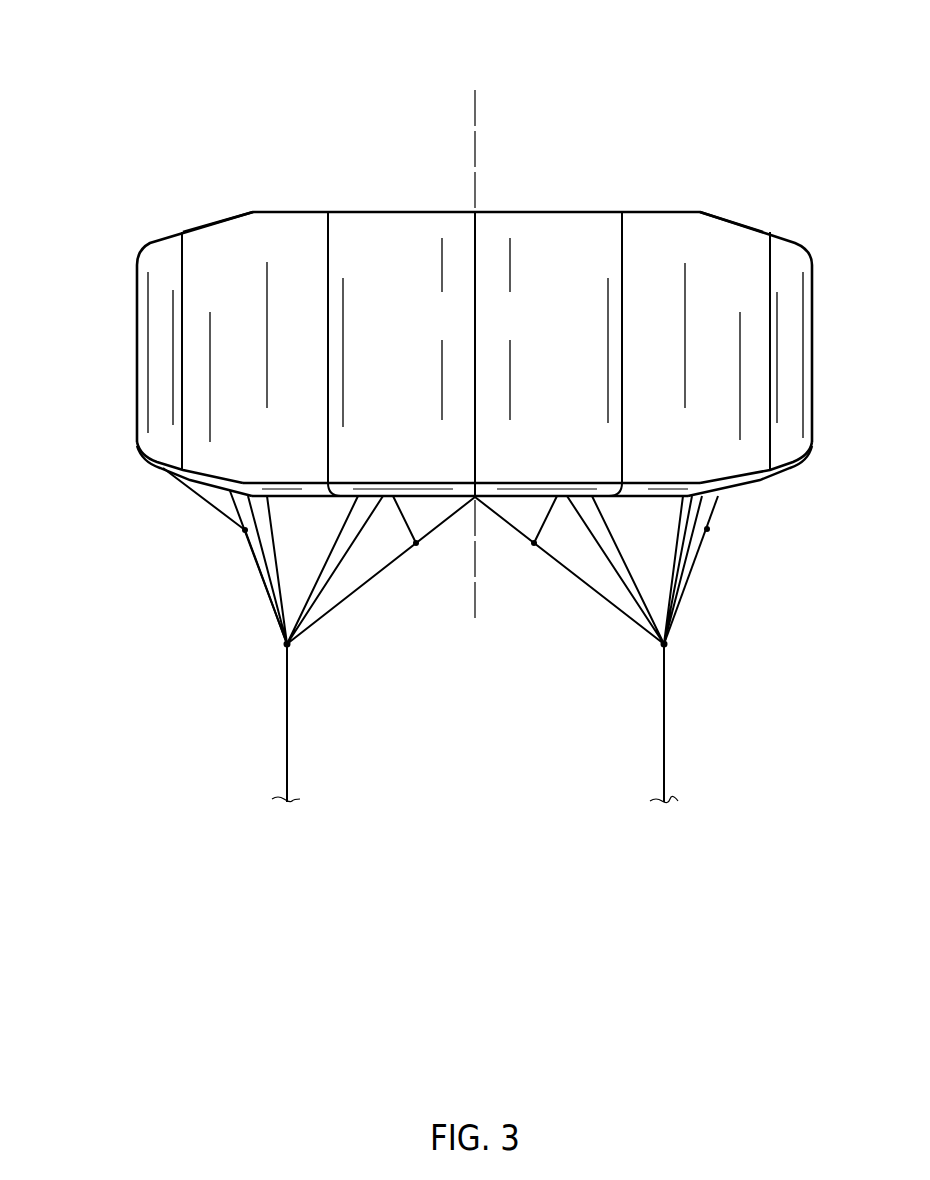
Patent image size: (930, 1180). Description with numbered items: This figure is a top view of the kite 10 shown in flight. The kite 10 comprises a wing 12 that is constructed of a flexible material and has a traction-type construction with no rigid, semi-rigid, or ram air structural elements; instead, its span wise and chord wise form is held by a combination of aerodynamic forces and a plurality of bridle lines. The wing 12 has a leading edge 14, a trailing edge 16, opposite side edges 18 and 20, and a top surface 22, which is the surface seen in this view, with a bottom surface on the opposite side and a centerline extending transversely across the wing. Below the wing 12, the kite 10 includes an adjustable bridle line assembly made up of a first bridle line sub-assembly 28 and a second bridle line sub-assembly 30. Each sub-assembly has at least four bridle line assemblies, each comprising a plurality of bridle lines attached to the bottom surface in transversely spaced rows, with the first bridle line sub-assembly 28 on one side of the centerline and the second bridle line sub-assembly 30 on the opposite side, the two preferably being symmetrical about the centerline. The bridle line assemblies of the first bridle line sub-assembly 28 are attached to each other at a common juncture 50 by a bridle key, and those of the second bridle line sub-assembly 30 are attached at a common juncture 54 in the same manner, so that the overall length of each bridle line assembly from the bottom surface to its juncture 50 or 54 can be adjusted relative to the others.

The kite 10 is at (724, 66).
The wing 12 is at (733, 222).
The leading edge 14 is at (800, 458).
The trailing edge 16 is at (531, 212).
The side edge 18 is at (137, 385).
The side edge 20 is at (813, 390).
The top surface 22 is at (411, 227).
The first bridle line sub-assembly 28 is at (240, 592).
The second bridle line sub-assembly 30 is at (711, 610).
The common juncture 50 is at (287, 644).
The common juncture 54 is at (665, 644).